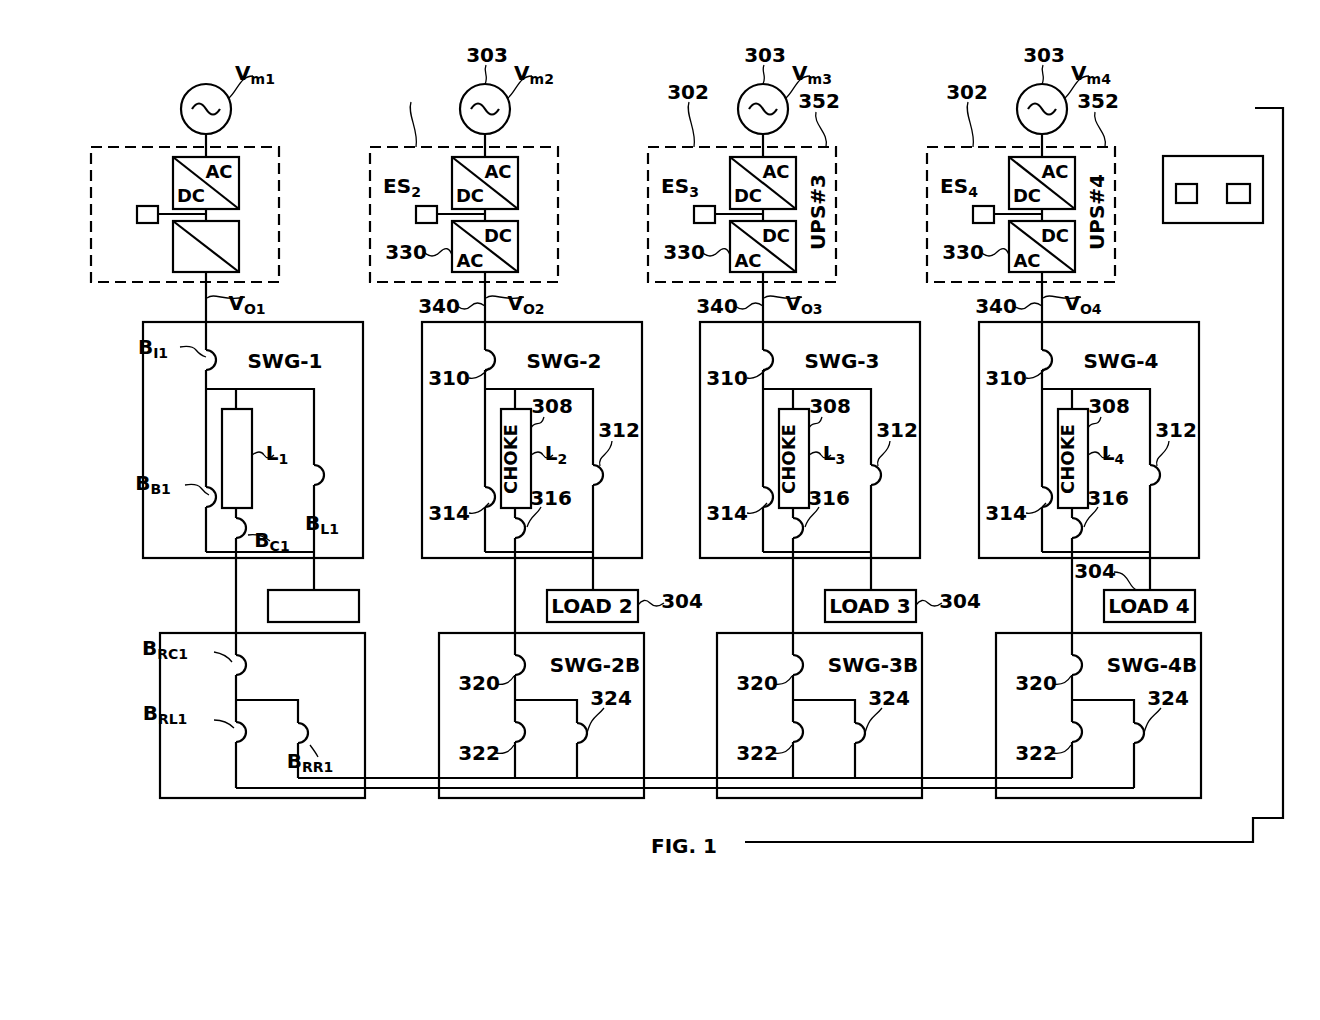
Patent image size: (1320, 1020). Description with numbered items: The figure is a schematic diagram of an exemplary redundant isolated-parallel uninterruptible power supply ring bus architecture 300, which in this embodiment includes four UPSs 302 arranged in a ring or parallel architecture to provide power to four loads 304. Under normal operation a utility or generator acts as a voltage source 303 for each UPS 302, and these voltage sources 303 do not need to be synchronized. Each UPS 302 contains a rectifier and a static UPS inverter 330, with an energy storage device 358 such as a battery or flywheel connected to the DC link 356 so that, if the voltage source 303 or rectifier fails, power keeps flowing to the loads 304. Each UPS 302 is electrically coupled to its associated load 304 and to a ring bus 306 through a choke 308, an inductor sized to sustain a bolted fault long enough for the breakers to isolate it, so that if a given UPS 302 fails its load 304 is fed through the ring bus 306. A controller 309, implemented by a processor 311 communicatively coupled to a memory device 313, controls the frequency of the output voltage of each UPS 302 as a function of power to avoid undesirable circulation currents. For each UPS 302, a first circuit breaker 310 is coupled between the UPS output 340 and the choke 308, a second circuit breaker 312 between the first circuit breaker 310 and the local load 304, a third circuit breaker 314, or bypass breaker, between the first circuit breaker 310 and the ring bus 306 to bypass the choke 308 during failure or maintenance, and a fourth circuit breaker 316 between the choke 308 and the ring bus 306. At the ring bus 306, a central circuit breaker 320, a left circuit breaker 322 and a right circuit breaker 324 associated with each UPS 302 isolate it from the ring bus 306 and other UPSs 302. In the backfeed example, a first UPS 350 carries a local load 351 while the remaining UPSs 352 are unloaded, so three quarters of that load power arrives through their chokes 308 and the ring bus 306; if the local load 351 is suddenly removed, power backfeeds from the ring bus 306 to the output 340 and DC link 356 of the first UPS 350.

The ring bus architecture 300 is at (1147, 92).
The UPS 302 is at (137, 147).
The voltage source 303 is at (206, 84).
The load 304 is at (359, 605).
The ring bus 306 is at (303, 798).
The choke 308 is at (252, 428).
The controller 309 is at (1212, 156).
The first circuit breaker 310 is at (210, 368).
The processor 311 is at (1186, 203).
The second circuit breaker 312 is at (321, 466).
The memory device 313 is at (1237, 203).
The third circuit breaker 314 is at (210, 503).
The fourth circuit breaker 316 is at (248, 527).
The central circuit breaker 320 is at (235, 676).
The left circuit breaker 322 is at (235, 745).
The right circuit breaker 324 is at (308, 733).
The static UPS inverter 330 is at (173, 255).
The UPS output 340 is at (206, 306).
The first UPS 350 is at (269, 147).
The local load 351 is at (333, 590).
The remaining UPS 352 is at (466, 181).
The DC link 356 is at (208, 214).
The energy storage device 358 is at (137, 214).